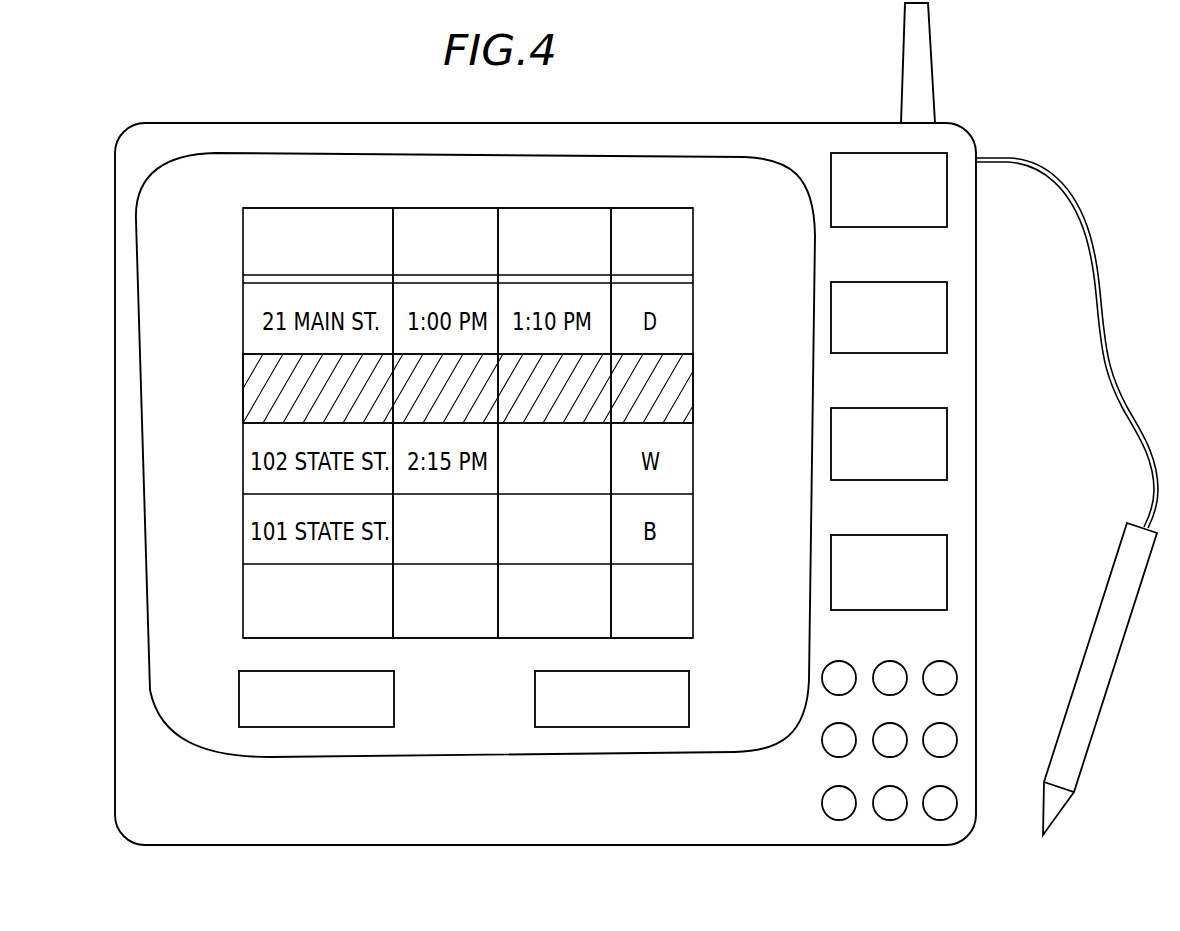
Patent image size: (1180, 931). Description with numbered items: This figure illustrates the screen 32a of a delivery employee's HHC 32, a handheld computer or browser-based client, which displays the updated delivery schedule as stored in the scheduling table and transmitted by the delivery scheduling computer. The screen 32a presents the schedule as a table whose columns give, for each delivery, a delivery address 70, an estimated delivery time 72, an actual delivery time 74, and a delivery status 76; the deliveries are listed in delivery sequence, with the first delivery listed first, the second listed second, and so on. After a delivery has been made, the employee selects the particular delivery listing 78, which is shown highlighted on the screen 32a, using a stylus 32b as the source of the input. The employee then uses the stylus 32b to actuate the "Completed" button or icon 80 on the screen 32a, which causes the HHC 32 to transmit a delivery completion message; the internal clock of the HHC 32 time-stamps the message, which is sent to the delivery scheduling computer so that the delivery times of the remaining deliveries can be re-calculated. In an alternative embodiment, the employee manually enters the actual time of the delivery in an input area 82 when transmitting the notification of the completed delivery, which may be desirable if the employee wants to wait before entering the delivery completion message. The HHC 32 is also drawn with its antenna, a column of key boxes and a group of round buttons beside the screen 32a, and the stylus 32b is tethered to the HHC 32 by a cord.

The HHC 32 is at (969, 128).
The screen 32a is at (752, 162).
The stylus 32b is at (1120, 547).
The delivery address 70 is at (324, 208).
The estimated delivery time 72 is at (430, 208).
The actual delivery time 74 is at (538, 208).
The delivery status 76 is at (638, 208).
The delivery listing 78 is at (243, 384).
The Completed button 80 is at (262, 672).
The input area 82 is at (647, 671).